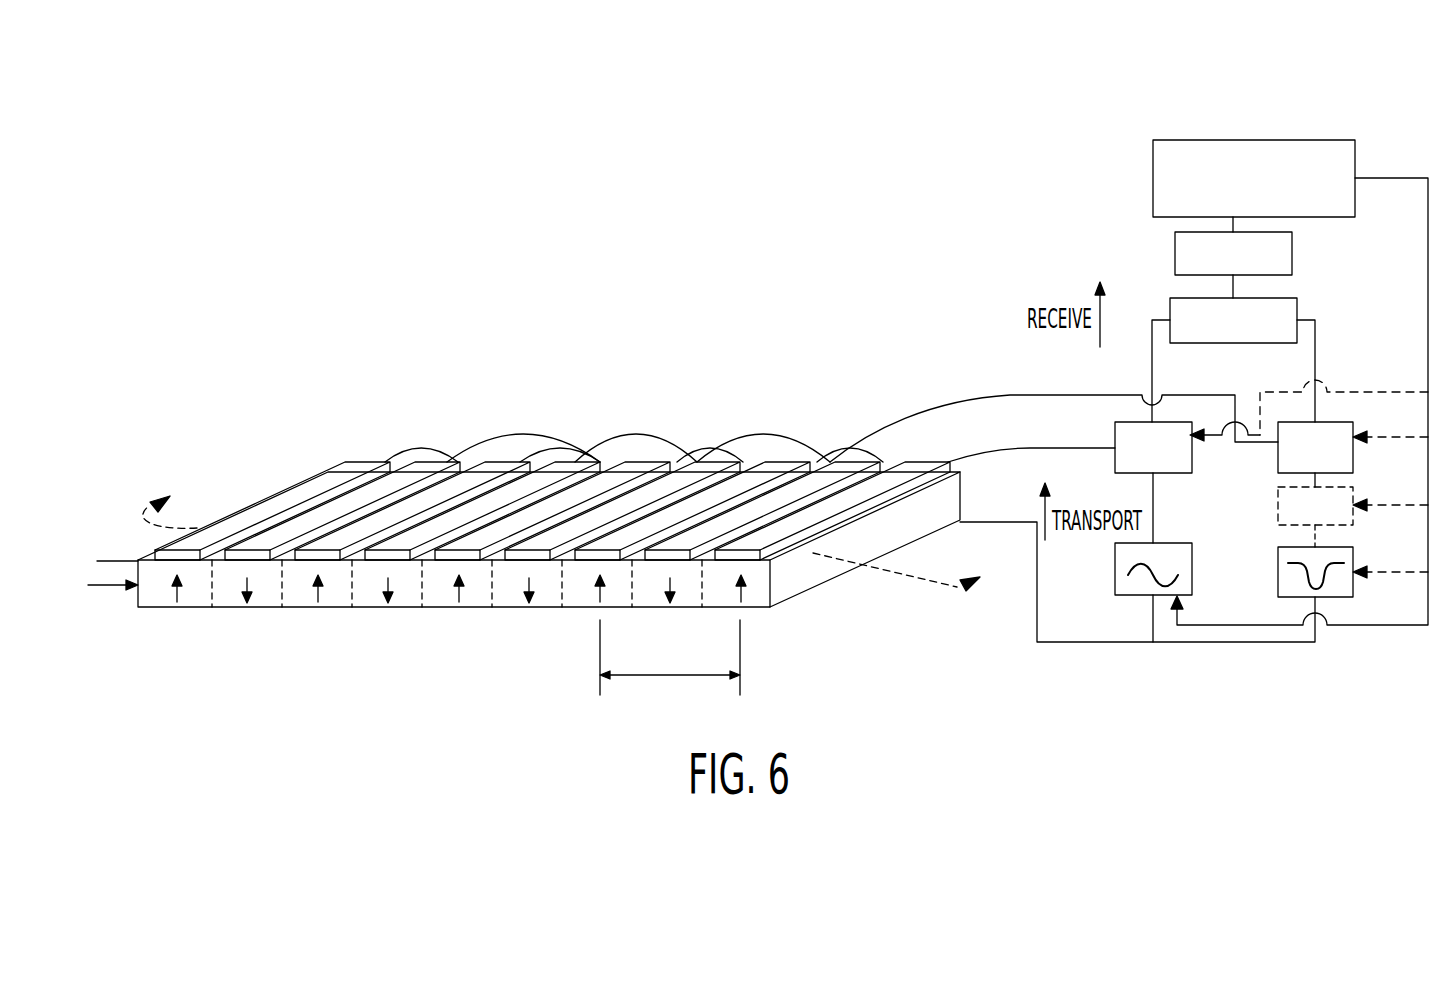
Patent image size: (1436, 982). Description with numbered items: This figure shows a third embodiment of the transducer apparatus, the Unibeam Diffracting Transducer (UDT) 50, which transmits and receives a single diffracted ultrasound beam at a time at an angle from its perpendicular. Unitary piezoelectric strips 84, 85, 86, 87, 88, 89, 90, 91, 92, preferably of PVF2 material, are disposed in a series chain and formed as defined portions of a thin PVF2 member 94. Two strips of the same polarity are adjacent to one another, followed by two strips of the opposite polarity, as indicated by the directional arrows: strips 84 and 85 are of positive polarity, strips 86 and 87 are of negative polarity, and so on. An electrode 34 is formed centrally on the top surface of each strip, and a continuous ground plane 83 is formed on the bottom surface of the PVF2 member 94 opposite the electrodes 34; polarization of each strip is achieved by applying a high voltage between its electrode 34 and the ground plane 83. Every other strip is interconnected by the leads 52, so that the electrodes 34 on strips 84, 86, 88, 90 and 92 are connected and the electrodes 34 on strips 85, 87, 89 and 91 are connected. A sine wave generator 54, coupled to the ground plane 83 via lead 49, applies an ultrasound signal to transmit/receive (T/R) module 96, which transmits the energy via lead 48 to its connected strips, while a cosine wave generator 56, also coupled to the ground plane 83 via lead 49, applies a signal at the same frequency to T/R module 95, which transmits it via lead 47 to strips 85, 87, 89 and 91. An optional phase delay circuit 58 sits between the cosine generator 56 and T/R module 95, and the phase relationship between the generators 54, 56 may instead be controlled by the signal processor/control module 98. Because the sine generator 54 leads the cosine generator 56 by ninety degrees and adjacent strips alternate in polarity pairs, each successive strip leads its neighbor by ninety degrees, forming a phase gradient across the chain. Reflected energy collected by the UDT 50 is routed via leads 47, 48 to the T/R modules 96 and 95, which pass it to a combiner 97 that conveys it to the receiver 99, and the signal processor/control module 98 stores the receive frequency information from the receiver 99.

The electrode 34 is at (597, 452).
The lead 47 is at (893, 420).
The lead 48 is at (990, 447).
The lead 49 is at (988, 521).
The Unibeam Diffracting Transducer (UDT) 50 is at (276, 428).
The leads 52 is at (830, 453).
The sine wave generator 54 is at (1115, 592).
The cosine wave generator 56 is at (1353, 597).
The phase delay circuit 58 is at (1352, 527).
The ground plane 83 is at (203, 608).
The piezoelectric strip 84 is at (755, 598).
The piezoelectric strip 85 is at (656, 598).
The piezoelectric strip 86 is at (612, 598).
The piezoelectric strip 87 is at (544, 598).
The piezoelectric strip 88 is at (447, 598).
The piezoelectric strip 89 is at (402, 598).
The piezoelectric strip 90 is at (306, 598).
The piezoelectric strip 91 is at (262, 598).
The piezoelectric strip 92 is at (164, 598).
The PVF2 member 94 is at (99, 585).
The transmit/receive (T/R) module 95 is at (1346, 422).
The transmit/receive (T/R) module 96 is at (1112, 430).
The combiner 97 is at (1297, 300).
The signal processor/control module 98 is at (1307, 140).
The receiver 99 is at (1292, 250).